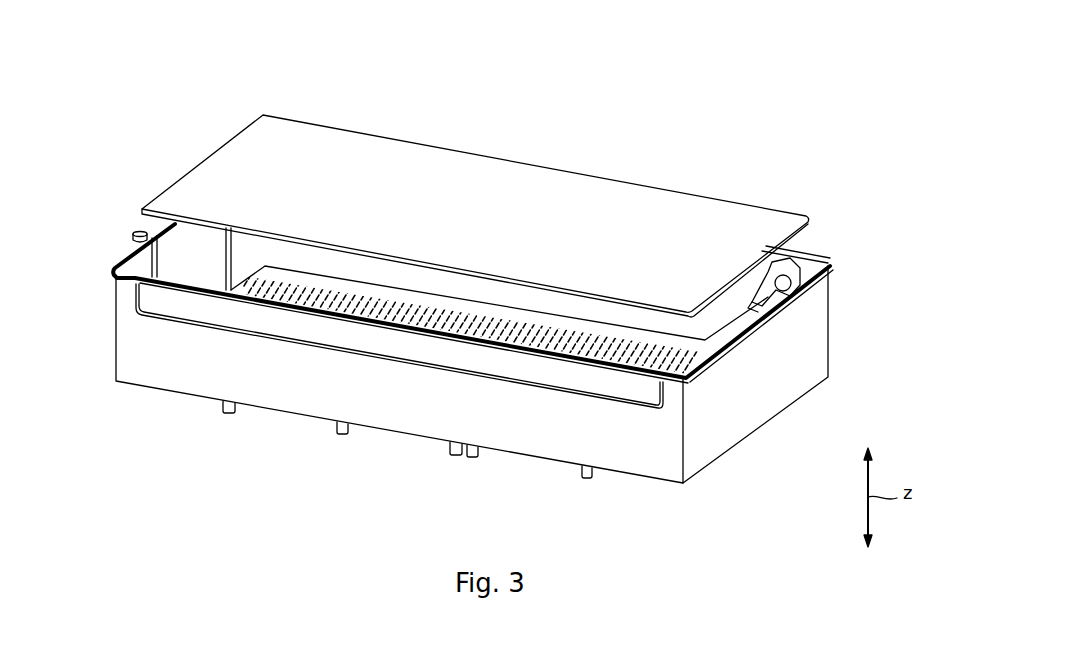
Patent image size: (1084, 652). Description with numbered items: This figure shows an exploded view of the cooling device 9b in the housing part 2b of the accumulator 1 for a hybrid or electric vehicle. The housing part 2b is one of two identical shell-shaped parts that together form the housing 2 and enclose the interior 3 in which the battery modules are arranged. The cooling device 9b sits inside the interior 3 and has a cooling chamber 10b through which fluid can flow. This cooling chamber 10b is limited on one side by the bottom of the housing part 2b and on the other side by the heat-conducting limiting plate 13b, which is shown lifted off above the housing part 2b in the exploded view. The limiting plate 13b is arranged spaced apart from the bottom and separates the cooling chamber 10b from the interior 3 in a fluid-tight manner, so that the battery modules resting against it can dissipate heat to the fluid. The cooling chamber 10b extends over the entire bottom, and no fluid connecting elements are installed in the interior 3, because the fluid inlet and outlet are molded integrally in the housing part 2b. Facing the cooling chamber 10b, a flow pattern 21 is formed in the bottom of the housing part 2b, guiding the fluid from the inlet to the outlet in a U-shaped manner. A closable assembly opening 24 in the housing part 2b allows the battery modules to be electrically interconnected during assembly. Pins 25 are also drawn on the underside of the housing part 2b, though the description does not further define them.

The accumulator 1 is at (507, 288).
The housing 2 is at (507, 343).
The housing part 2b is at (444, 343).
The interior 3 is at (731, 328).
The cooling device 9b is at (120, 216).
The cooling chamber 10b is at (552, 322).
The limiting plate 13b is at (659, 210).
The flow pattern 21 is at (372, 300).
The closable assembly opening 24 is at (160, 302).
The connection pins 25 is at (230, 413).